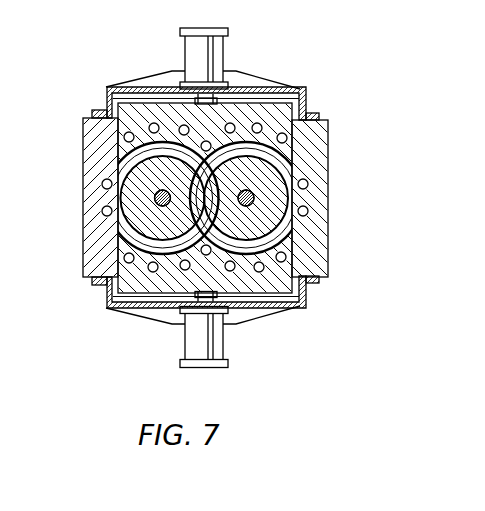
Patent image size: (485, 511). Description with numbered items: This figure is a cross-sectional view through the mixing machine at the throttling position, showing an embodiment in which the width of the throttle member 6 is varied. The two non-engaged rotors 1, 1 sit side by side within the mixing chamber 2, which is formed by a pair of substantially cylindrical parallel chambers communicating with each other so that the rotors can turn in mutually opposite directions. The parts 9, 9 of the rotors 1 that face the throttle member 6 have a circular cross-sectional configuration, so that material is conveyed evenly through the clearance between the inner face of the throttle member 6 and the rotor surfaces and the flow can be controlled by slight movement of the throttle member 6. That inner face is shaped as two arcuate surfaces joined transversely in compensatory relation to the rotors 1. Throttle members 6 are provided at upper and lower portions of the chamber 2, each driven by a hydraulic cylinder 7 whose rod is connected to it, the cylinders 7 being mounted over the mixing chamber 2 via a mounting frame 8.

The rotor 1 is at (128, 165).
The mixing chamber 2 is at (212, 199).
The throttle member 6 is at (304, 100).
The hydraulic cylinder 7 is at (223, 56).
The mounting frame 8 is at (136, 87).
The circular cross-section part of rotor 9 is at (137, 197).